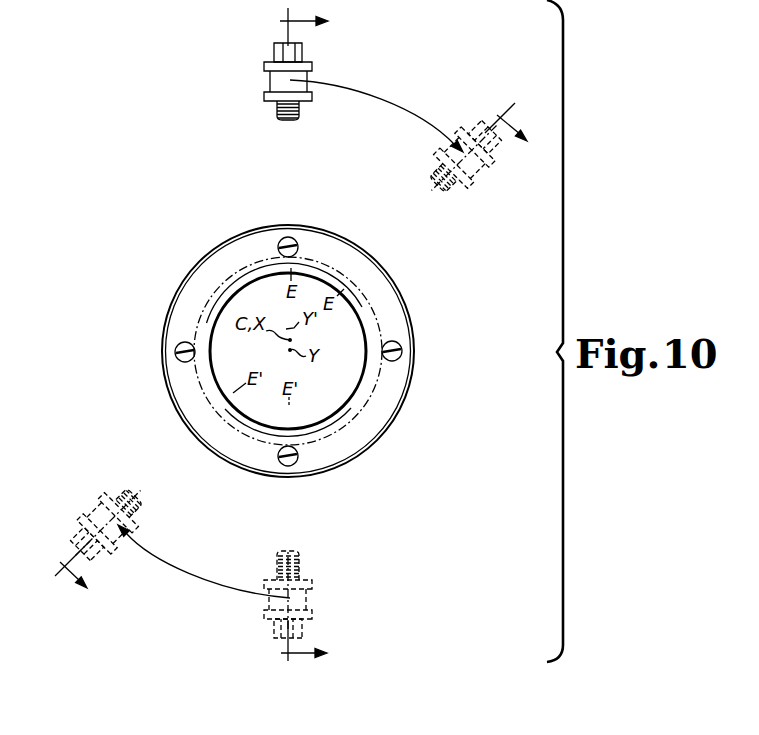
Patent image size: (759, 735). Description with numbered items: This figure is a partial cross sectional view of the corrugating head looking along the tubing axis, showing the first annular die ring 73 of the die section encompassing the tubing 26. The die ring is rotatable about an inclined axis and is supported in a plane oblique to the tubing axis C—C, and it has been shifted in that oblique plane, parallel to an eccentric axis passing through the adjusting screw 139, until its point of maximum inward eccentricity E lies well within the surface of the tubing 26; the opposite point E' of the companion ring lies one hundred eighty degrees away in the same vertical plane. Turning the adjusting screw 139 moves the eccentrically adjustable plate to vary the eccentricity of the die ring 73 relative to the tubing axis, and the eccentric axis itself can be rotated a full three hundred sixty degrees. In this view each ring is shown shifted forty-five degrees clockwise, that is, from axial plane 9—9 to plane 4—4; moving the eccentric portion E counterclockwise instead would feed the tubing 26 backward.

The adjusting screw 139 is at (275, 52).
The first annular die ring 73 is at (388, 312).
The tubing 26 is at (322, 405).
The axial plane 9— 9 is at (311, 27).
The plane 4— 4 is at (477, 155).